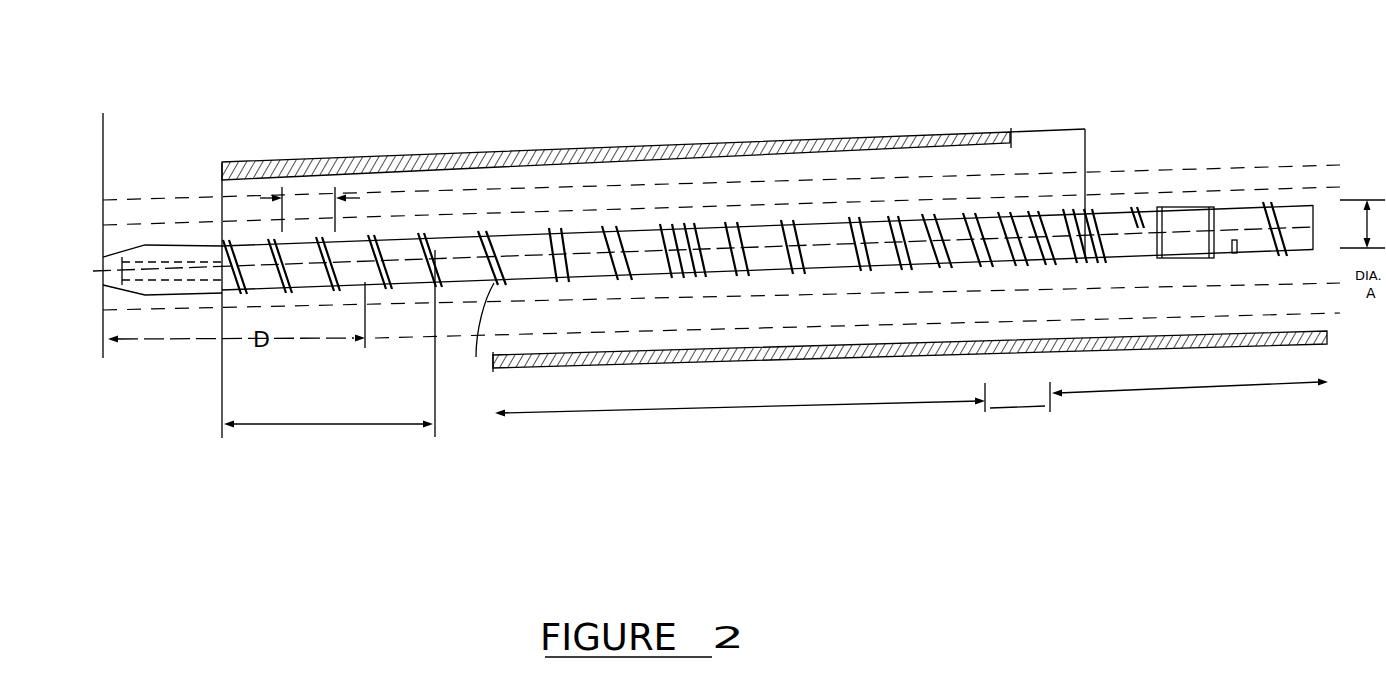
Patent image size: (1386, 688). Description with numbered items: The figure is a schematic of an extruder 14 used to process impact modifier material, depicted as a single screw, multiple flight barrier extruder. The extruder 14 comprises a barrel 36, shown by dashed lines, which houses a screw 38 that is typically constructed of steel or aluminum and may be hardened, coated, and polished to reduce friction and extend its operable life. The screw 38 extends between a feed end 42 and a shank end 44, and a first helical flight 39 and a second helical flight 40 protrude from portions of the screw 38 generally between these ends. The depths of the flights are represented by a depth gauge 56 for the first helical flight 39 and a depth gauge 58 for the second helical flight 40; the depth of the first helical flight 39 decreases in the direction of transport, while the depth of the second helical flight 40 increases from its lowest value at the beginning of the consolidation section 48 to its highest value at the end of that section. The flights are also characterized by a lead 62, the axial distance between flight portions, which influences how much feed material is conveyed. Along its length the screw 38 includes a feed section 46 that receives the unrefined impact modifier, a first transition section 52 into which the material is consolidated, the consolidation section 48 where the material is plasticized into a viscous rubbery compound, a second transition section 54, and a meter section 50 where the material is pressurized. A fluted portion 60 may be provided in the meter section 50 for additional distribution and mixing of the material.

The extruder 14 is at (275, 569).
The barrel 36 is at (181, 198).
The screw 38 is at (926, 220).
The first helical flight 39 is at (474, 333).
The second helical flight 40 is at (631, 228).
The feed end 42 is at (137, 312).
The shank end 44 is at (1343, 279).
The feed section 46 is at (327, 303).
The consolidation section 48 is at (740, 407).
The meter section 50 is at (1190, 396).
The first transition section 52 is at (451, 347).
The second transition section 54 is at (1020, 410).
The depth gauge 56 is at (442, 160).
The depth gauge 58 is at (673, 367).
The fluted portion 60 is at (1187, 207).
The lead 62 is at (310, 209).